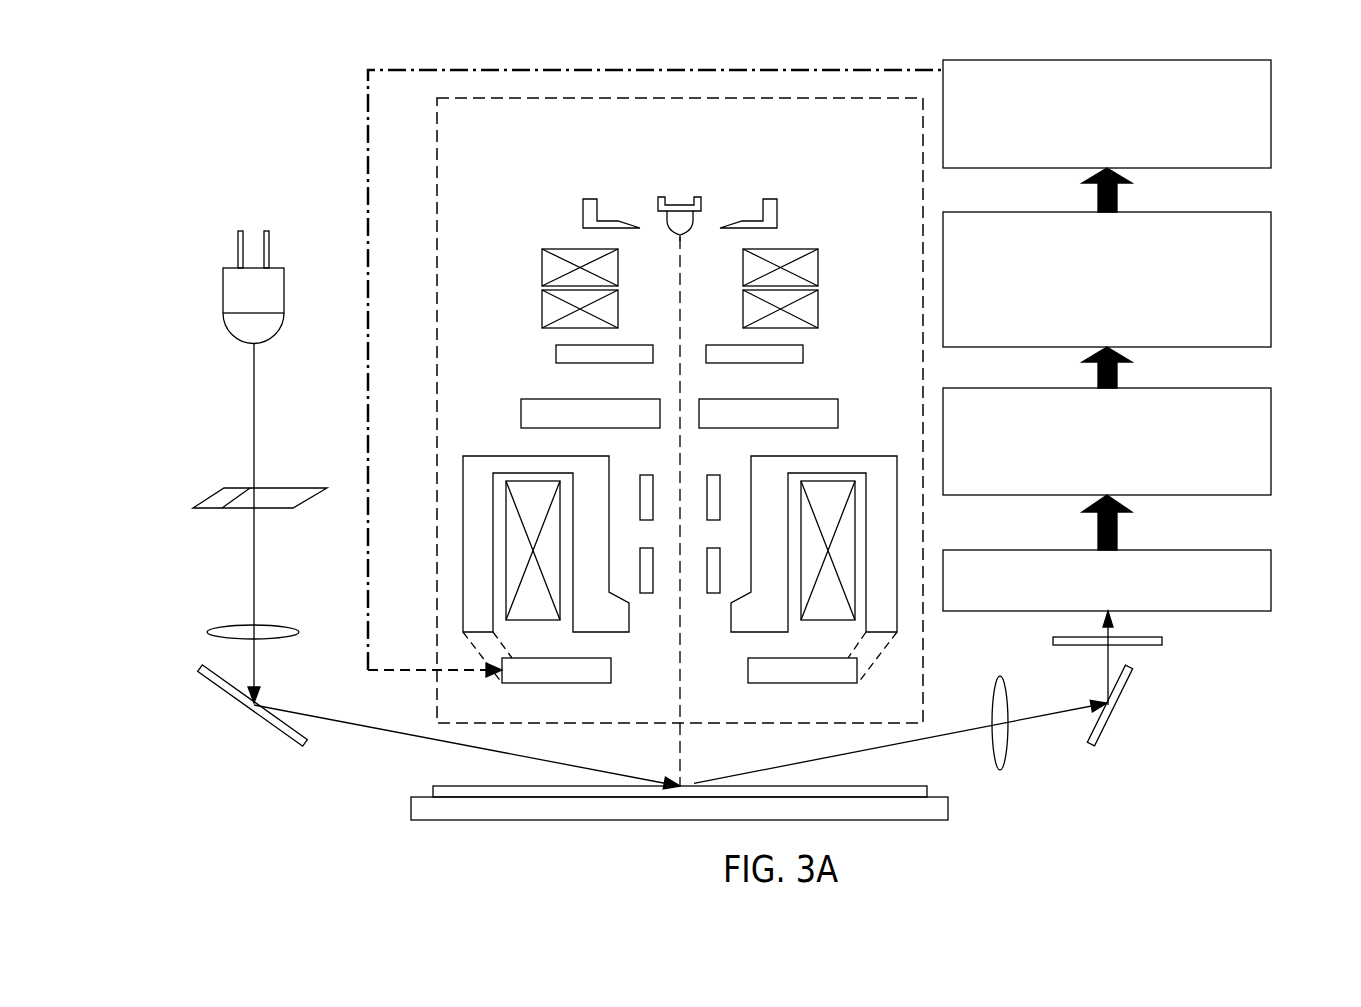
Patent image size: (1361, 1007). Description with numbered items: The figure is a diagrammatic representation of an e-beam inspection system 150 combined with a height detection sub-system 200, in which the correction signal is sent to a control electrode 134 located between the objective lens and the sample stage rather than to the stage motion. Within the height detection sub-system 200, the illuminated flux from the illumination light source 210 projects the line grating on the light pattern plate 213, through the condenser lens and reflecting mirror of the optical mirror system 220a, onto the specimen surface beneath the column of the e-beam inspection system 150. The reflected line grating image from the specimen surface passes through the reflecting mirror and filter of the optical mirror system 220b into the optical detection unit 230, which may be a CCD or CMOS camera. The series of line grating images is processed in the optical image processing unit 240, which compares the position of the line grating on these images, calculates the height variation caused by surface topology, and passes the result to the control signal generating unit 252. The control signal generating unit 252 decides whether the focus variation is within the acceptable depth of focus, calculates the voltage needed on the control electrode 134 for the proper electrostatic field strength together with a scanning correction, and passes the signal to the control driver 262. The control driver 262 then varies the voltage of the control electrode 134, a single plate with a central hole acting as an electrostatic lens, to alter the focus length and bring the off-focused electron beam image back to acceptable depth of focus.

The height detection sub-system 200 is at (218, 187).
The illumination light source 210 is at (236, 298).
The light pattern plate 213 is at (230, 494).
The optical mirror system 220a is at (237, 630).
The optical mirror system 220b is at (1150, 645).
The e-beam inspection system 150 is at (508, 138).
The control electrode 134 is at (528, 684).
The optical detection unit 230 is at (1272, 581).
The optical image processing unit 240 is at (1272, 443).
The control signal generating unit 252 is at (1272, 295).
The control driver 262 is at (1272, 113).